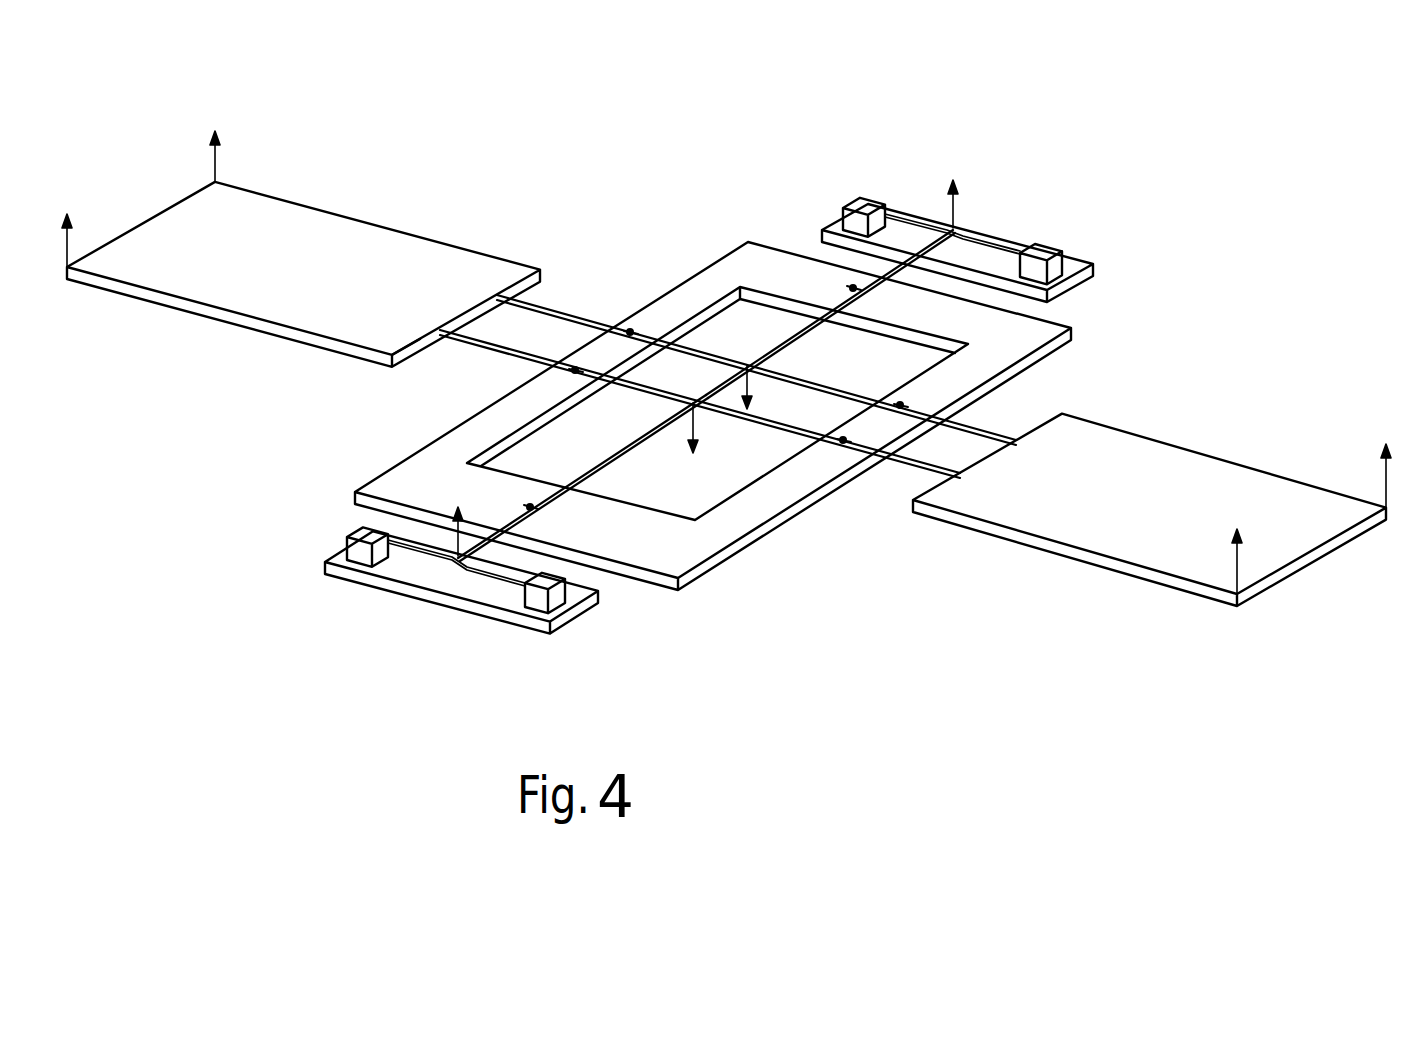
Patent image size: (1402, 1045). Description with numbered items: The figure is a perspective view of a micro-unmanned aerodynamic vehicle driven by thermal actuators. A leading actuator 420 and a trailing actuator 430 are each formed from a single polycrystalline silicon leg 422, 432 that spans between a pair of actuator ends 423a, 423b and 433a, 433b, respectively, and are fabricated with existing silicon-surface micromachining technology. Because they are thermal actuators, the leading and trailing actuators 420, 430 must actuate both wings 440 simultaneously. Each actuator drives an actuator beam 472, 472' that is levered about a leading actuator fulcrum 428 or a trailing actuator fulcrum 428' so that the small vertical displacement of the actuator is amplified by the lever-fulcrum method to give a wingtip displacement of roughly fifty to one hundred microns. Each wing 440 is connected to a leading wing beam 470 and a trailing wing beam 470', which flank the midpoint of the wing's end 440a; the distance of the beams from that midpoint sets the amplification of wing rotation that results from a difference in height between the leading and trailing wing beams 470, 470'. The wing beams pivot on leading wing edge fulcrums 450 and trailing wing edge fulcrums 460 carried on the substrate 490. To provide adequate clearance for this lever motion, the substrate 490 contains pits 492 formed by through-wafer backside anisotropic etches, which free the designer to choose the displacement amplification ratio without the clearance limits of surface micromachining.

The leading actuator 420 is at (400, 600).
The polycrystalline silicon leg 422 is at (497, 577).
The actuator end 423a is at (350, 547).
The actuator end 423b is at (560, 593).
The leading actuator fulcrum 428 is at (568, 523).
The trailing actuator fulcrum 428' is at (898, 309).
The trailing actuator 430 is at (997, 207).
The polycrystalline silicon leg 432 is at (1013, 240).
The actuator end 433a is at (858, 202).
The actuator end 433b is at (1063, 257).
The wing 440 is at (300, 240).
The wing's end 440a is at (410, 352).
The leading wing edge fulcrum 450 is at (575, 373).
The trailing wing edge fulcrum 460 is at (632, 330).
The leading wing beam 470 is at (700, 404).
The trailing wing beam 470' is at (756, 344).
The actuator beam 472 is at (617, 503).
The actuator beam 472' is at (830, 291).
The substrate 490 is at (423, 487).
The pit 492 is at (865, 368).